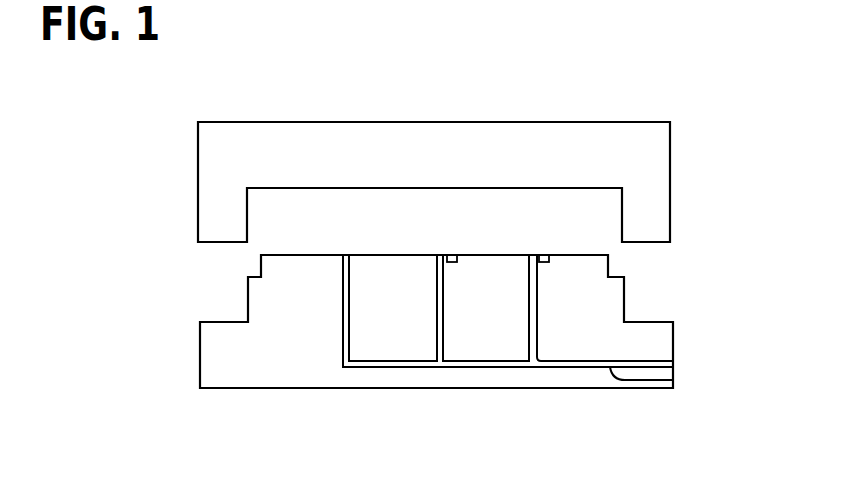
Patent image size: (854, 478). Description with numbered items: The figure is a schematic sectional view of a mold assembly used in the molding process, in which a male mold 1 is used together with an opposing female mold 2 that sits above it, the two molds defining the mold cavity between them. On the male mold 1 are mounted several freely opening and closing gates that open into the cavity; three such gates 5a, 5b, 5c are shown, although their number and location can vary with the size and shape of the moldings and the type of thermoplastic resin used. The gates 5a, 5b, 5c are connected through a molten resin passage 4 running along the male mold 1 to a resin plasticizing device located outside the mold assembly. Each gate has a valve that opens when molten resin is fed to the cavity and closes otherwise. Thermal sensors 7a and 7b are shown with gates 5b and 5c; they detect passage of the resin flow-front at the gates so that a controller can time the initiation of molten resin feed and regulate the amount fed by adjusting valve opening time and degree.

The male mold 1 is at (603, 295).
The female mold 2 is at (632, 153).
The molten resin passage 4 is at (673, 380).
The gate 5a is at (345, 254).
The gate 5b is at (436, 254).
The gate 5c is at (532, 254).
The thermal sensor 7a is at (453, 263).
The thermal sensor 7b is at (545, 263).